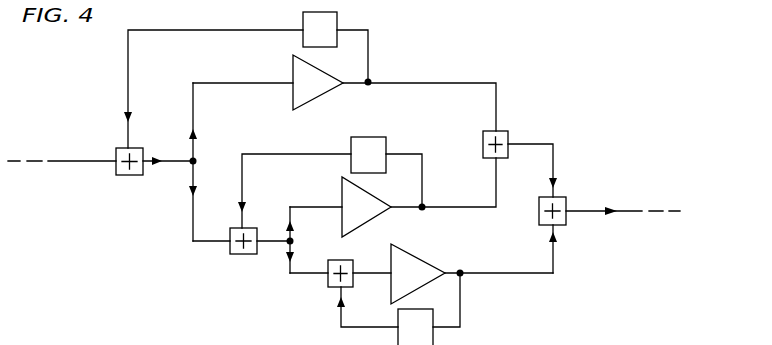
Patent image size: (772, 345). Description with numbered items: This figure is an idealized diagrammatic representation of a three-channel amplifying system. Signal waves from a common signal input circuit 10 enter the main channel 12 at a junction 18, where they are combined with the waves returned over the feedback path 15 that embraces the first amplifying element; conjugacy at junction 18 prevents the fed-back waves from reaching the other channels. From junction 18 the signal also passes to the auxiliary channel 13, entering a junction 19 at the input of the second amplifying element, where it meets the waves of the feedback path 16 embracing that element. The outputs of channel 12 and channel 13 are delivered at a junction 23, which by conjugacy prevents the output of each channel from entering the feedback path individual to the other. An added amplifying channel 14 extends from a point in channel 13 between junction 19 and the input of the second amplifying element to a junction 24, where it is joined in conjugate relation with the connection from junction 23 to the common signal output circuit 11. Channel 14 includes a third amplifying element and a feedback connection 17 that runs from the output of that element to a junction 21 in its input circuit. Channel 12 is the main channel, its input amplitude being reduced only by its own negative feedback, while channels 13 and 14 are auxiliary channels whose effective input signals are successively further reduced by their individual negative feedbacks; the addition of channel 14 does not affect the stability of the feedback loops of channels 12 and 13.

The common signal input circuit 10 is at (78, 158).
The common signal output circuit 11 is at (624, 211).
The transmission channel 12 is at (223, 83).
The transmission channel 13 is at (302, 207).
The amplifying channel 14 is at (297, 277).
The feedback path 15 is at (221, 30).
The feedback path 16 is at (298, 154).
The feedback connection 17 is at (446, 329).
The junction 18 is at (136, 148).
The junction 19 is at (254, 228).
The junction 21 is at (332, 289).
The junction 23 is at (510, 131).
The junction 24 is at (568, 198).